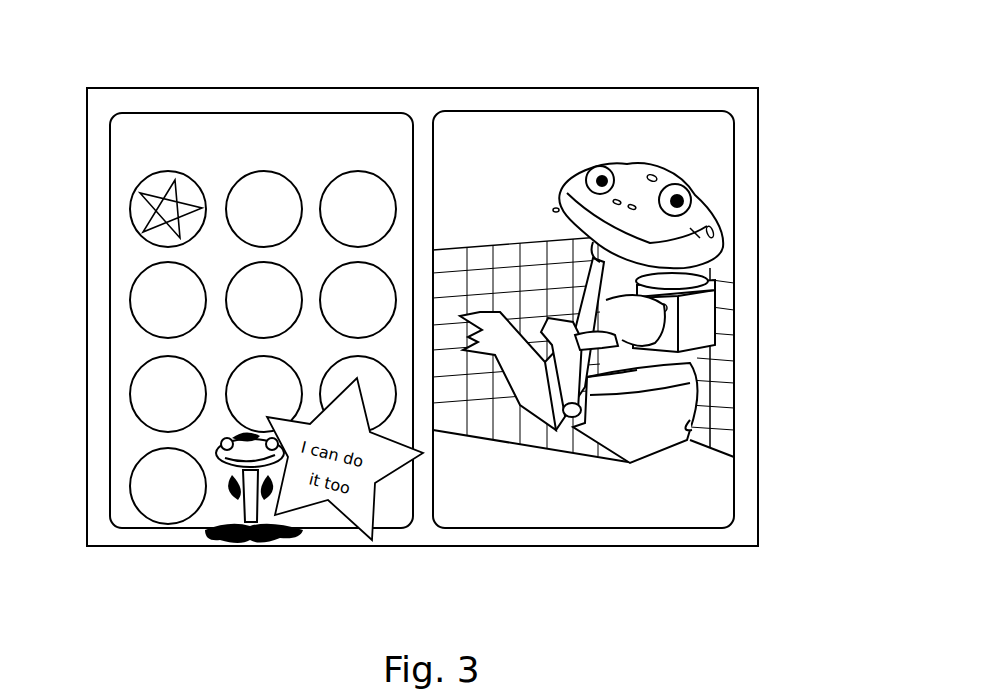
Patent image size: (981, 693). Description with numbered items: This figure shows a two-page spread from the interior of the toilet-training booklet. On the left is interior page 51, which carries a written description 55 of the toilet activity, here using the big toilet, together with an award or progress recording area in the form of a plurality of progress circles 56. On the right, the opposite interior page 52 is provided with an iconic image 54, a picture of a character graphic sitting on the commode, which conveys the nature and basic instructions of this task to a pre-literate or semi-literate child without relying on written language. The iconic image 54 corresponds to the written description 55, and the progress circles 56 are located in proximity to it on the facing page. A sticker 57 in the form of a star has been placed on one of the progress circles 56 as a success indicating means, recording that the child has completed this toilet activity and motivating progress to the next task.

The interior page 51 is at (240, 113).
The interior page 52 is at (543, 105).
The iconic image 54 is at (723, 243).
The written description 55 is at (353, 130).
The progress circles 56 is at (150, 312).
The sticker 57 is at (133, 193).